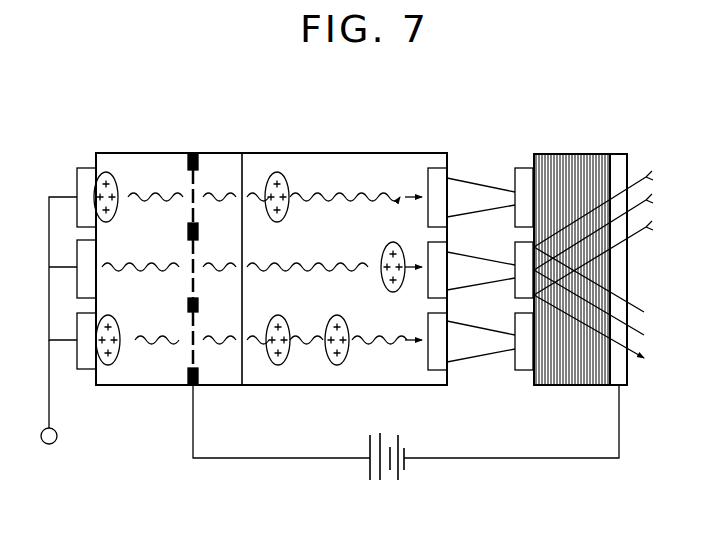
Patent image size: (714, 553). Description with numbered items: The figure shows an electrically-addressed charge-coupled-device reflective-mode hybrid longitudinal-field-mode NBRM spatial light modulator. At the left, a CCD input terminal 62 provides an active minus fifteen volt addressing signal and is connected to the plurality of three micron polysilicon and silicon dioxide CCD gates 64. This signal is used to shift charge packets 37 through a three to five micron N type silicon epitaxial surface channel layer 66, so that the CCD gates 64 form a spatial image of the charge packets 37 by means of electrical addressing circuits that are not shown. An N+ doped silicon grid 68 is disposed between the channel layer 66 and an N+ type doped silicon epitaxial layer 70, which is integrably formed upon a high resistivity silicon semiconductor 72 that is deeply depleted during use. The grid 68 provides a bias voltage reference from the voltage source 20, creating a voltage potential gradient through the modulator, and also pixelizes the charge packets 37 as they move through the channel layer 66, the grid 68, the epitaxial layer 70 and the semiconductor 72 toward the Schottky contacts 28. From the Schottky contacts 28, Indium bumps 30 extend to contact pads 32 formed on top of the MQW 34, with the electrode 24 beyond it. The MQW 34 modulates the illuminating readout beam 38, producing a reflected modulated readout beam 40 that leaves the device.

The voltage source 20 is at (368, 473).
The electrode 24 is at (617, 154).
The Schottky contacts 28 is at (437, 168).
The Indium bumps 30 is at (467, 178).
The contact pads 32 is at (513, 170).
The MQW 34 is at (582, 154).
The charge packets 37 is at (283, 173).
The illuminating readout beam 38 is at (647, 208).
The reflected modulated readout beam 40 is at (647, 326).
The CCD input terminal 62 is at (49, 395).
The CCD gates 64 is at (86, 167).
The channel layer 66 is at (138, 153).
The grid 68 is at (192, 153).
The epitaxial layer 70 is at (225, 153).
The semiconductor 72 is at (340, 153).